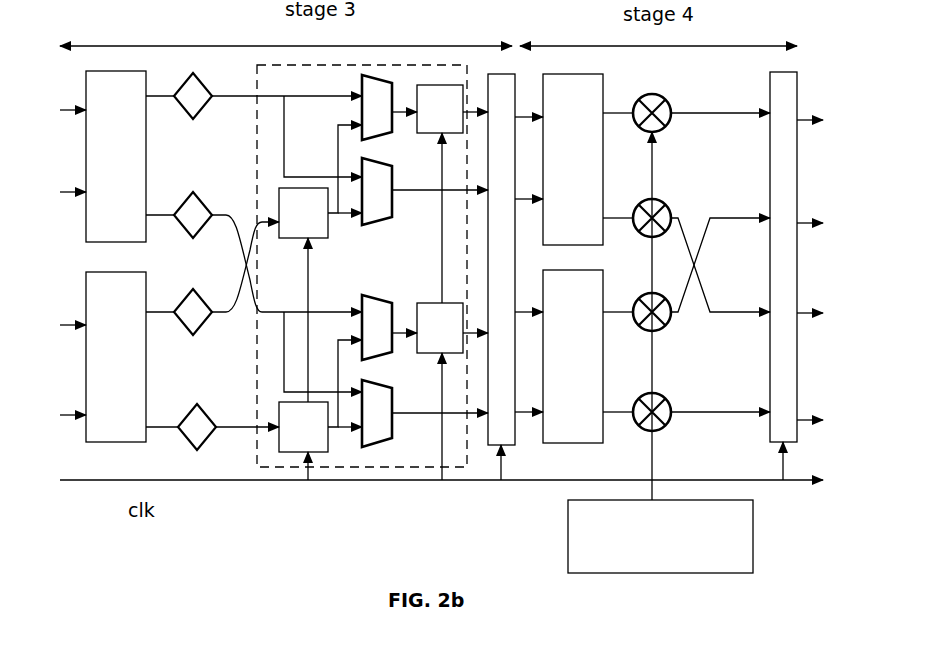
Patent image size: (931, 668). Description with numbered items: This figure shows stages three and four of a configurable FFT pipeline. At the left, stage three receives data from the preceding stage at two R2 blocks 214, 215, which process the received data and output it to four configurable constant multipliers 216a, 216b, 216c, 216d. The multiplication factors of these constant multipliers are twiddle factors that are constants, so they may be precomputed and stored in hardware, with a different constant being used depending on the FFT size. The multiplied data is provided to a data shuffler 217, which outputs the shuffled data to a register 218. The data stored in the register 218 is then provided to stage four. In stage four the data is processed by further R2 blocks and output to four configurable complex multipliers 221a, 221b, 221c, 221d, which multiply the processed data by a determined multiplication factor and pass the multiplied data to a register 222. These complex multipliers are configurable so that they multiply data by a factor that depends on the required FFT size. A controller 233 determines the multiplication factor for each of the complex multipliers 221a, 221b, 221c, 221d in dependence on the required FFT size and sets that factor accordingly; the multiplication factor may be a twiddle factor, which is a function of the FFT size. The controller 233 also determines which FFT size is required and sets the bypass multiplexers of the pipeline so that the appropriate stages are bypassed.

The R2 block 214 is at (86, 154).
The R2 block 215 is at (86, 357).
The configurable constant multiplier 216a is at (193, 73).
The configurable constant multiplier 216b is at (193, 192).
The configurable constant multiplier 216c is at (193, 289).
The configurable constant multiplier 216d is at (197, 404).
The data shuffler 217 is at (391, 470).
The register 218 is at (490, 72).
The configurable complex multiplier 221a is at (663, 97).
The configurable complex multiplier 221b is at (660, 200).
The configurable complex multiplier 221c is at (644, 297).
The configurable complex multiplier 221d is at (660, 395).
The register 222 is at (799, 77).
The controller 233 is at (753, 535).